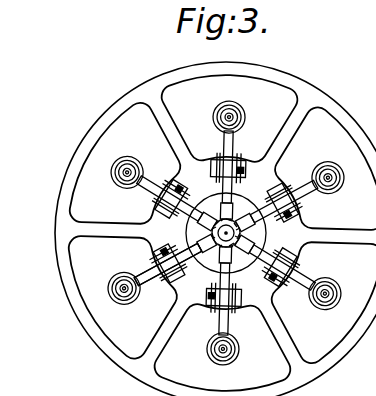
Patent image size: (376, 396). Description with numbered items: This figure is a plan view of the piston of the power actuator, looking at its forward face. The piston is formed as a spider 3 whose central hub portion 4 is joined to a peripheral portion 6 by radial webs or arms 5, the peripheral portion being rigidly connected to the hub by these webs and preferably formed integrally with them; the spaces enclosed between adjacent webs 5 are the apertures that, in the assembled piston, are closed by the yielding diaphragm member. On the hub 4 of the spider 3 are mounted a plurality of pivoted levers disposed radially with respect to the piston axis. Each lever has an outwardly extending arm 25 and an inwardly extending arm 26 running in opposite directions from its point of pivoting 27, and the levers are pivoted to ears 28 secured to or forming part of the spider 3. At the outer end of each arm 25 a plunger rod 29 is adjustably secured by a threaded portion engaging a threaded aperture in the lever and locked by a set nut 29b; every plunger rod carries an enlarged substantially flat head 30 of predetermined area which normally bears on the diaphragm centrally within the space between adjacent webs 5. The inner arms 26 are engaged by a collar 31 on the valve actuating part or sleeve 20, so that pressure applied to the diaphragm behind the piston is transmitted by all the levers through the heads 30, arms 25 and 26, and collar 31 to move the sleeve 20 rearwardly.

The spider 3 is at (62, 219).
The hub portion 4 is at (186, 288).
The radial webs or arms 5 is at (175, 141).
The peripheral portion 6 is at (249, 72).
The valve actuating part or sleeve 20 is at (256, 307).
The outwardly extending arm 25 is at (293, 286).
The inwardly extending arm 26 is at (298, 251).
The point of pivoting 27 is at (275, 188).
The ears 28 is at (306, 221).
The plunger rods 29 is at (244, 123).
The set nuts 29b is at (238, 110).
The enlarged substantially flat head 30 is at (216, 106).
The collar 31 is at (204, 306).